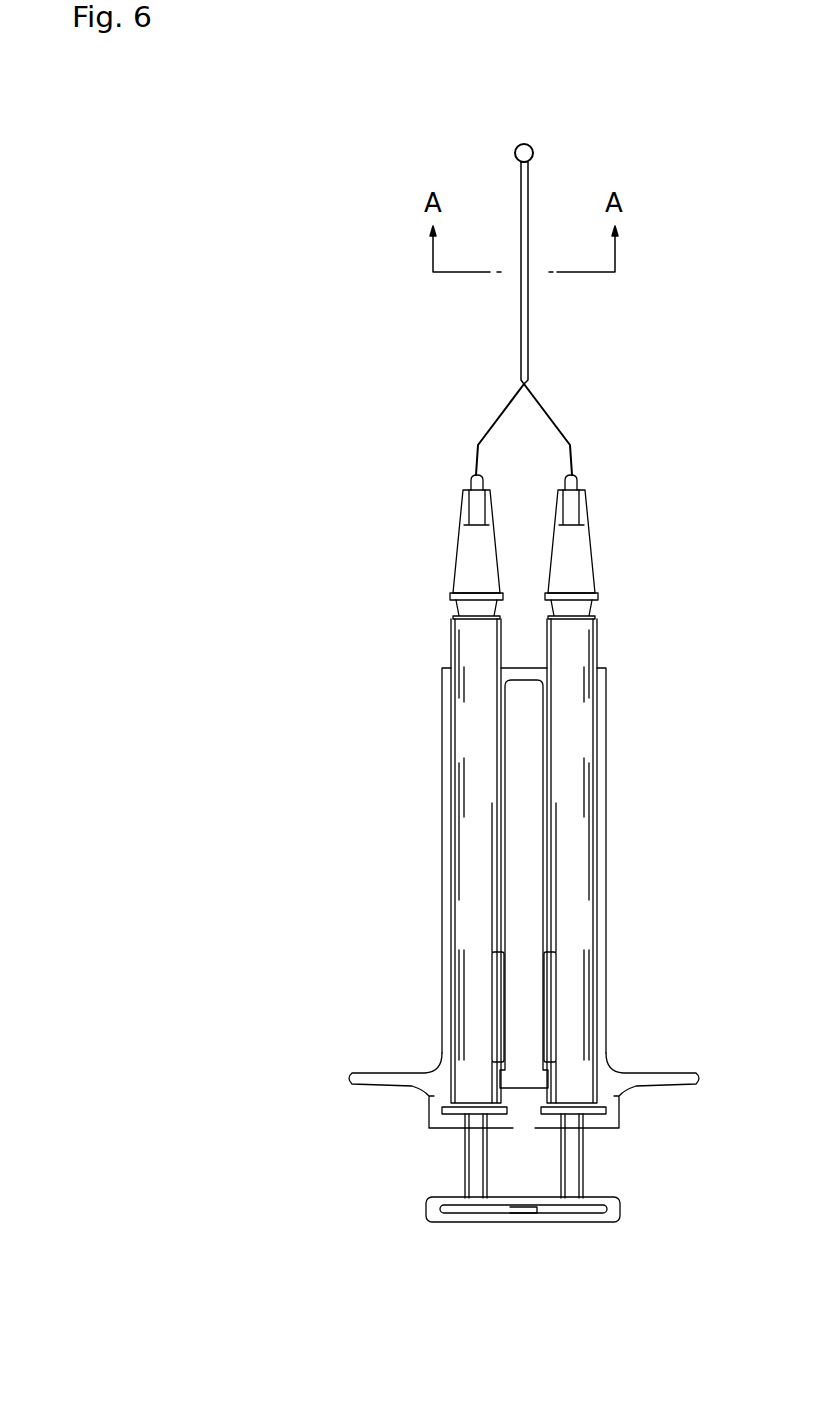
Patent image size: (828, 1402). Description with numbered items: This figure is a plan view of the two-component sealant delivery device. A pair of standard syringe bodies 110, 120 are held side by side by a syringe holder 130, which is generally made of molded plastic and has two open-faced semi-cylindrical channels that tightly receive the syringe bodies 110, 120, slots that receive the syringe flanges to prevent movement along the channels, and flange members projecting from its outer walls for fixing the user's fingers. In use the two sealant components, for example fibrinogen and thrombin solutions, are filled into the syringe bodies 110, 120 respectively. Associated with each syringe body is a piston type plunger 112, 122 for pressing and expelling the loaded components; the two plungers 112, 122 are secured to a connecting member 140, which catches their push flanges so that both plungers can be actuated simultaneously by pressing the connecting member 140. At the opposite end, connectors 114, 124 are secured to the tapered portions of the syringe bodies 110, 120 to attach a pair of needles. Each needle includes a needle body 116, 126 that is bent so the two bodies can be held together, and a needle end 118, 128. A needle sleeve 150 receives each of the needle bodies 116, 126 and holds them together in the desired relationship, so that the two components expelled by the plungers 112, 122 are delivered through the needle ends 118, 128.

The syringe body 110 is at (597, 640).
The piston type plunger 112 is at (581, 1162).
The connector 114 is at (583, 553).
The needle body 116 is at (568, 443).
The needle end 118 is at (534, 156).
The syringe body 120 is at (454, 642).
The piston type plunger 122 is at (463, 1180).
The connector 124 is at (468, 560).
The needle body 126 is at (478, 441).
The needle end 128 is at (517, 149).
The syringe holder 130 is at (623, 1068).
The connecting member 140 is at (449, 1223).
The needle sleeve 150 is at (529, 347).